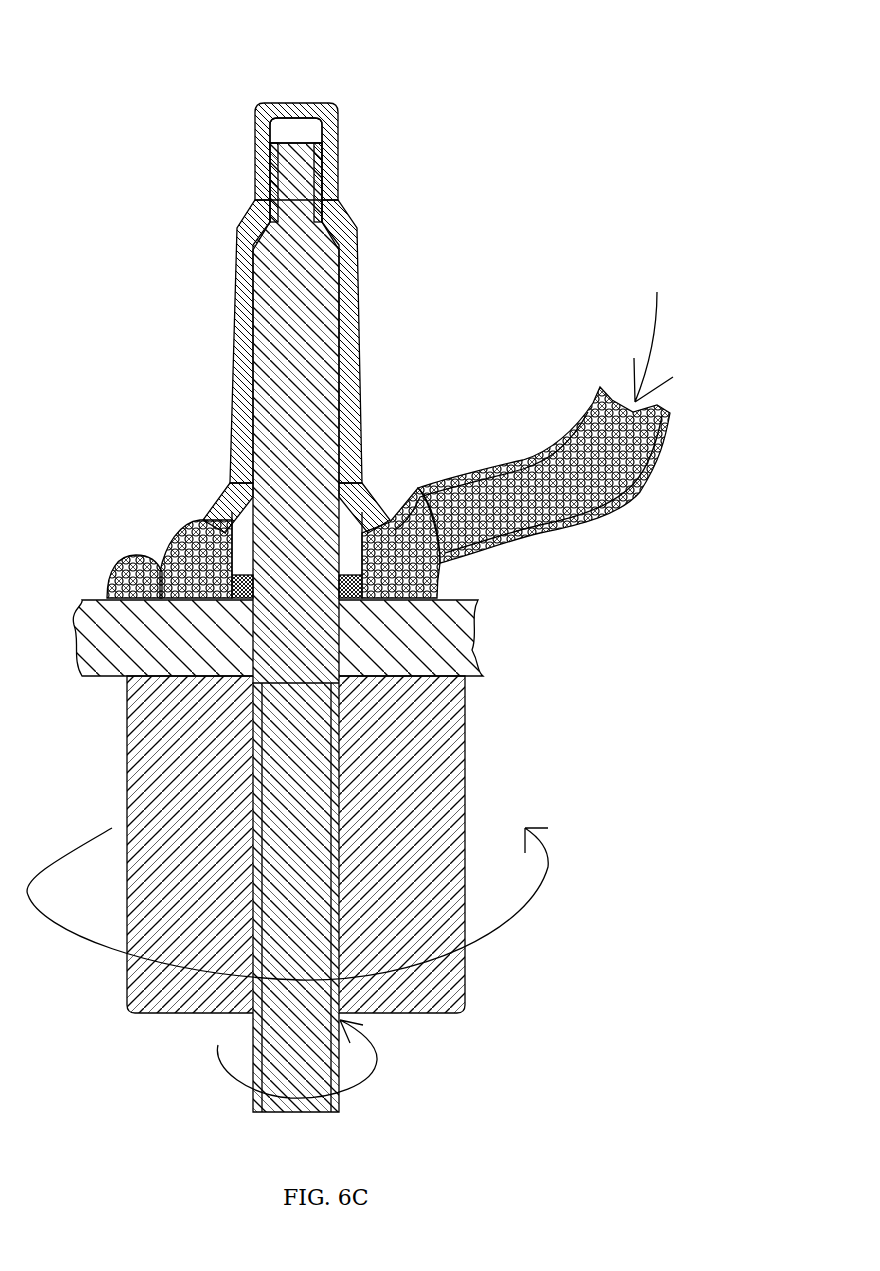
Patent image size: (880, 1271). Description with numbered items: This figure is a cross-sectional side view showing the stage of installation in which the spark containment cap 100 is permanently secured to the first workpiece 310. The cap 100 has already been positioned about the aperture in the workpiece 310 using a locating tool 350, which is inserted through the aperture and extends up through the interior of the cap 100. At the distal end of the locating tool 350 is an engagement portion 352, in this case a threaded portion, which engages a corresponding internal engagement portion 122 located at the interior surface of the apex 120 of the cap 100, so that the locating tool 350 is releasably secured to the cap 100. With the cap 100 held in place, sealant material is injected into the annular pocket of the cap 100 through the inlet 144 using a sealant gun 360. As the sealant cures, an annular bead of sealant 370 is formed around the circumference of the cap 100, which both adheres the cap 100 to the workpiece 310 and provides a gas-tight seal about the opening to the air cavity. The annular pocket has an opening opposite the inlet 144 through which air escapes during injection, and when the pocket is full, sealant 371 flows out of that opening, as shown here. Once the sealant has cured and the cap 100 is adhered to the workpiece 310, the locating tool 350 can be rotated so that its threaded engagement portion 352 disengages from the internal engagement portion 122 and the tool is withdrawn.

The spark containment cap 100 is at (360, 282).
The apex 120 is at (338, 115).
The internal engagement portion 122 is at (316, 157).
The inlet 144 is at (412, 500).
The first workpiece 310 is at (478, 618).
The locating tool 350 is at (312, 1113).
The engagement portion 352 is at (317, 175).
The sealant gun 360 is at (665, 450).
The annular bead of sealant 370 is at (188, 540).
The sealant 371 is at (130, 565).